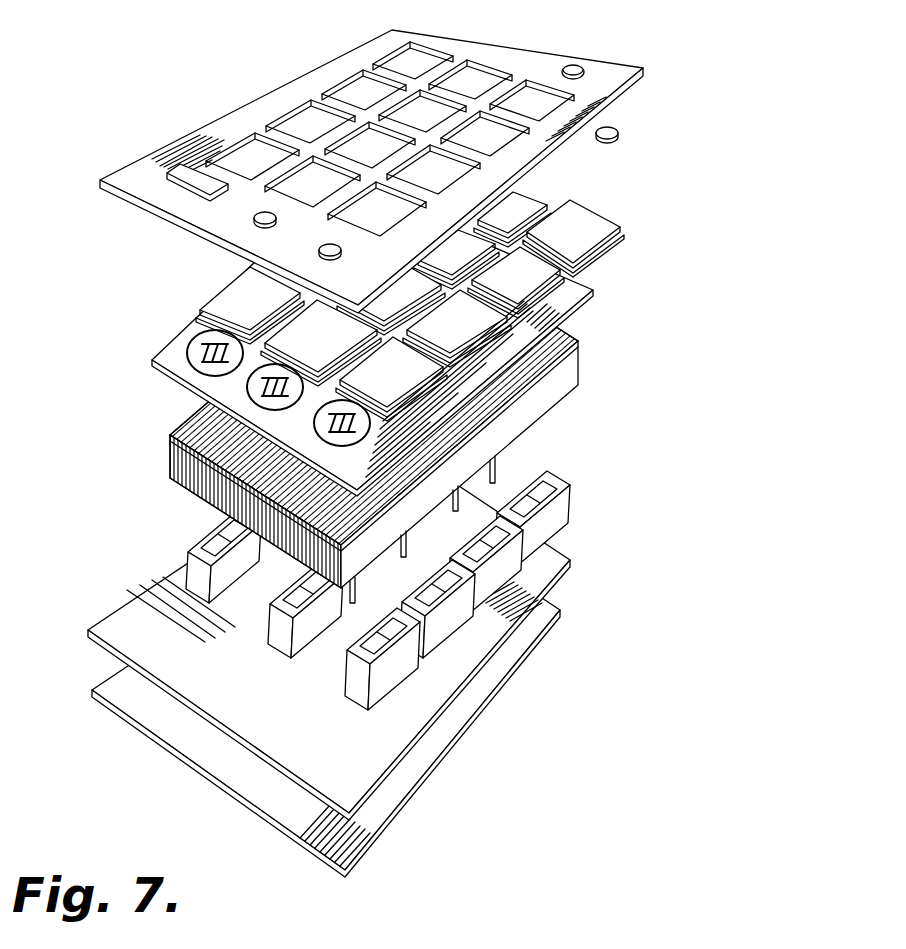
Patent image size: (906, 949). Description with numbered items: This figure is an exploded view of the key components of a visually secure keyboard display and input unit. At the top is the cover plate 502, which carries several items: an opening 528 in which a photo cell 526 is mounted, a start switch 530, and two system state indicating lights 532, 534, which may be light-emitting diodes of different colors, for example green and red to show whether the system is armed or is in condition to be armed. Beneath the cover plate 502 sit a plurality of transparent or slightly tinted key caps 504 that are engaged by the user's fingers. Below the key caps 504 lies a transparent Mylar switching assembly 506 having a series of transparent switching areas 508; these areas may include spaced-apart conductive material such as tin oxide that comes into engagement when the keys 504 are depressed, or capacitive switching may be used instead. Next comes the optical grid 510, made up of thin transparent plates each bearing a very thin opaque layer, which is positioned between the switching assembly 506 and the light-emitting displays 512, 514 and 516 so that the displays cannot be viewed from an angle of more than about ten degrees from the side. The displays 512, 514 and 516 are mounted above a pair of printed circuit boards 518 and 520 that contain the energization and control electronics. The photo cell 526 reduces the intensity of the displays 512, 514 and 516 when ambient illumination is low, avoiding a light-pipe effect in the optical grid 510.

The cover plate 502 is at (371, 156).
The key caps 504 is at (390, 300).
The transparent Mylar switching assembly 506 is at (428, 338).
The transparent switching areas 508 is at (231, 388).
The optical grid 510 is at (309, 417).
The light-emitting display 512 is at (319, 590).
The light-emitting display 514 is at (309, 627).
The light-emitting display 516 is at (326, 685).
The printed circuit board 518 is at (572, 600).
The printed circuit board 520 is at (445, 814).
The photo cell 526 is at (665, 115).
The opening 528 is at (613, 39).
The start switch 530 is at (187, 133).
The system state indicating light 532 is at (173, 212).
The system state indicating light 534 is at (245, 257).